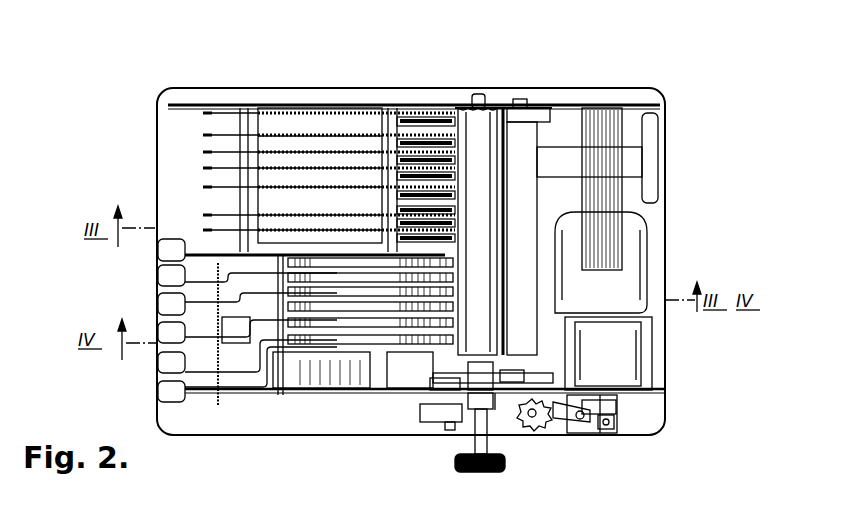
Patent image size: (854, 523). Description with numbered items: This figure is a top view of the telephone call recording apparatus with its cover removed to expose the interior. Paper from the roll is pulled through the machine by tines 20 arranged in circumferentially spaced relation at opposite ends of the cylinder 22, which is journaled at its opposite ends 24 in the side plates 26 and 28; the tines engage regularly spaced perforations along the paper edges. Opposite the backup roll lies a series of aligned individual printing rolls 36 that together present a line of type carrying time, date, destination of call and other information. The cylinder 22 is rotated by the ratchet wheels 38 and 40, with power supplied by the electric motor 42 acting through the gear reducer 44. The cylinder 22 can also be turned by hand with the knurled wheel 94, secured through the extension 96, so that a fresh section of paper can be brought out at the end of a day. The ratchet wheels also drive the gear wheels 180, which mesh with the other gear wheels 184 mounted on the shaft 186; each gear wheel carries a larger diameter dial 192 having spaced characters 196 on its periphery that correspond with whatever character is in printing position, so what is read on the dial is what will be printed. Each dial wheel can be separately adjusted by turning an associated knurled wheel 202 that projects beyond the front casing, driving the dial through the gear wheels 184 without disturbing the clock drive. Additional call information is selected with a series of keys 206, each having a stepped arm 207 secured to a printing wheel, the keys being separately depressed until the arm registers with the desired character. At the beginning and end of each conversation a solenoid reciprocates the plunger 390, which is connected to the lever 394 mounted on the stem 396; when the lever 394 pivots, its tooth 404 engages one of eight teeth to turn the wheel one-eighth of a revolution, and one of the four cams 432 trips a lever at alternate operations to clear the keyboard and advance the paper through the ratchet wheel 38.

The tines 20 is at (466, 108).
The cylinder 22 is at (488, 255).
The opposite ends 24 is at (487, 100).
The side plate 26 is at (562, 395).
The side plate 28 is at (570, 105).
The printing rolls 36 is at (455, 130).
The ratchet wheel 38 is at (498, 402).
The ratchet wheel 40 is at (540, 375).
The electric motor 42 is at (640, 245).
The gear reducer 44 is at (532, 255).
The knurled wheel 94 is at (478, 472).
The extension 96 is at (475, 440).
The gear wheels 180 is at (388, 118).
The gear wheels 184 is at (335, 118).
The shaft 186 is at (325, 118).
The dial 192 is at (287, 118).
The spaced characters 196 is at (262, 118).
The wheel 202 is at (203, 230).
The keys 206 is at (160, 333).
The arm 207 is at (238, 378).
The plunger 390 is at (620, 405).
The lever 394 is at (595, 425).
The stem 396 is at (583, 408).
The tooth 404 is at (560, 430).
The cams 432 is at (535, 428).